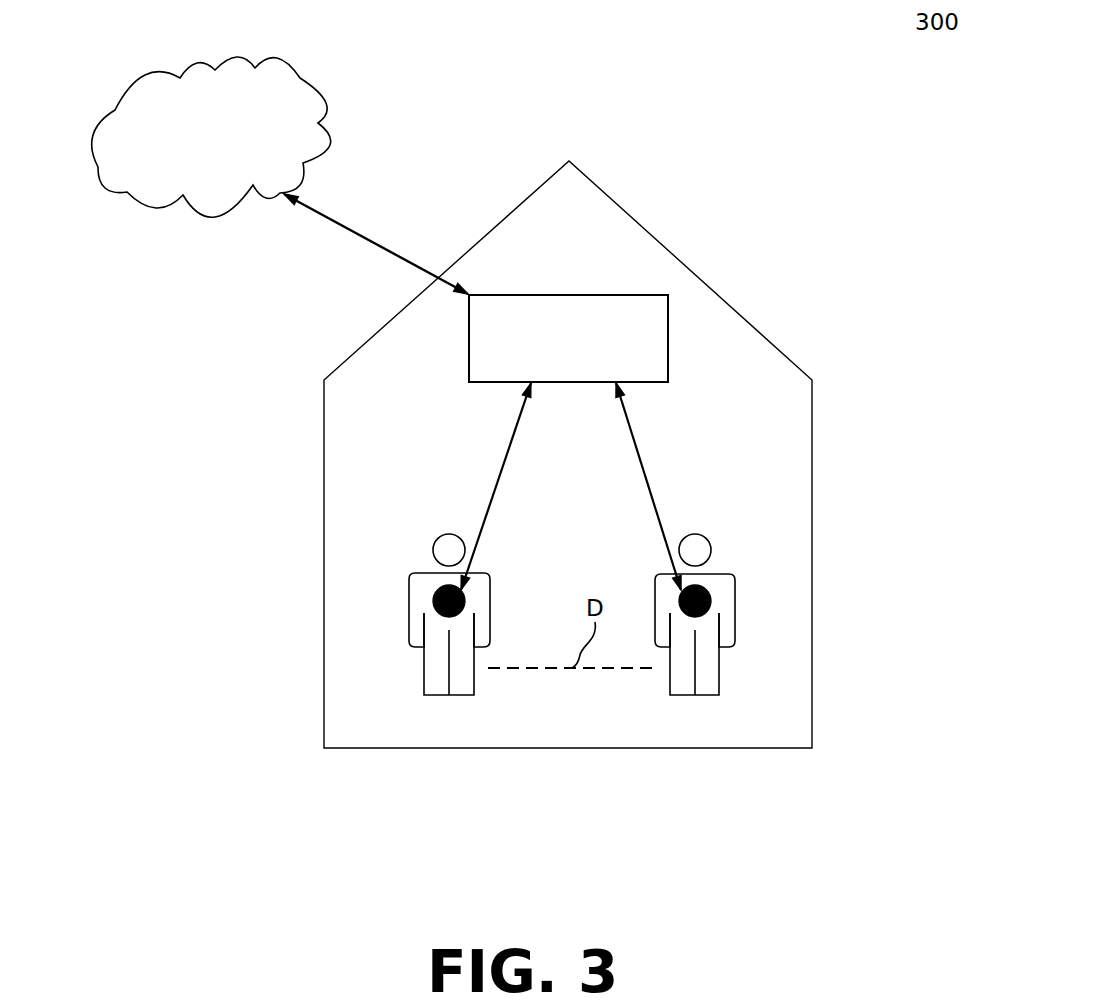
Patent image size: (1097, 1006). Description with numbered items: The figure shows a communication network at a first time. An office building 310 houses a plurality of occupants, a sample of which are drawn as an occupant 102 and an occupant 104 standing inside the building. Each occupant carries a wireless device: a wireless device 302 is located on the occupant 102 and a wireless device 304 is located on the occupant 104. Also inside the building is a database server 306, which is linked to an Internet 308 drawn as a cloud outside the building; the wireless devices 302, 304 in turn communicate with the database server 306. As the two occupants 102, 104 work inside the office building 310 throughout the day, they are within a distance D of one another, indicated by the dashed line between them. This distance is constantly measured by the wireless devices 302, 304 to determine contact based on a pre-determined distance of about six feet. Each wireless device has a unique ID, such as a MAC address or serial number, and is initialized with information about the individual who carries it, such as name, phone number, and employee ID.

The Internet 308 is at (190, 68).
The office building 310 is at (603, 192).
The database server 306 is at (655, 293).
The wireless device 302 is at (434, 602).
The wireless device 304 is at (707, 590).
The occupant 102 is at (364, 590).
The occupant 104 is at (785, 598).